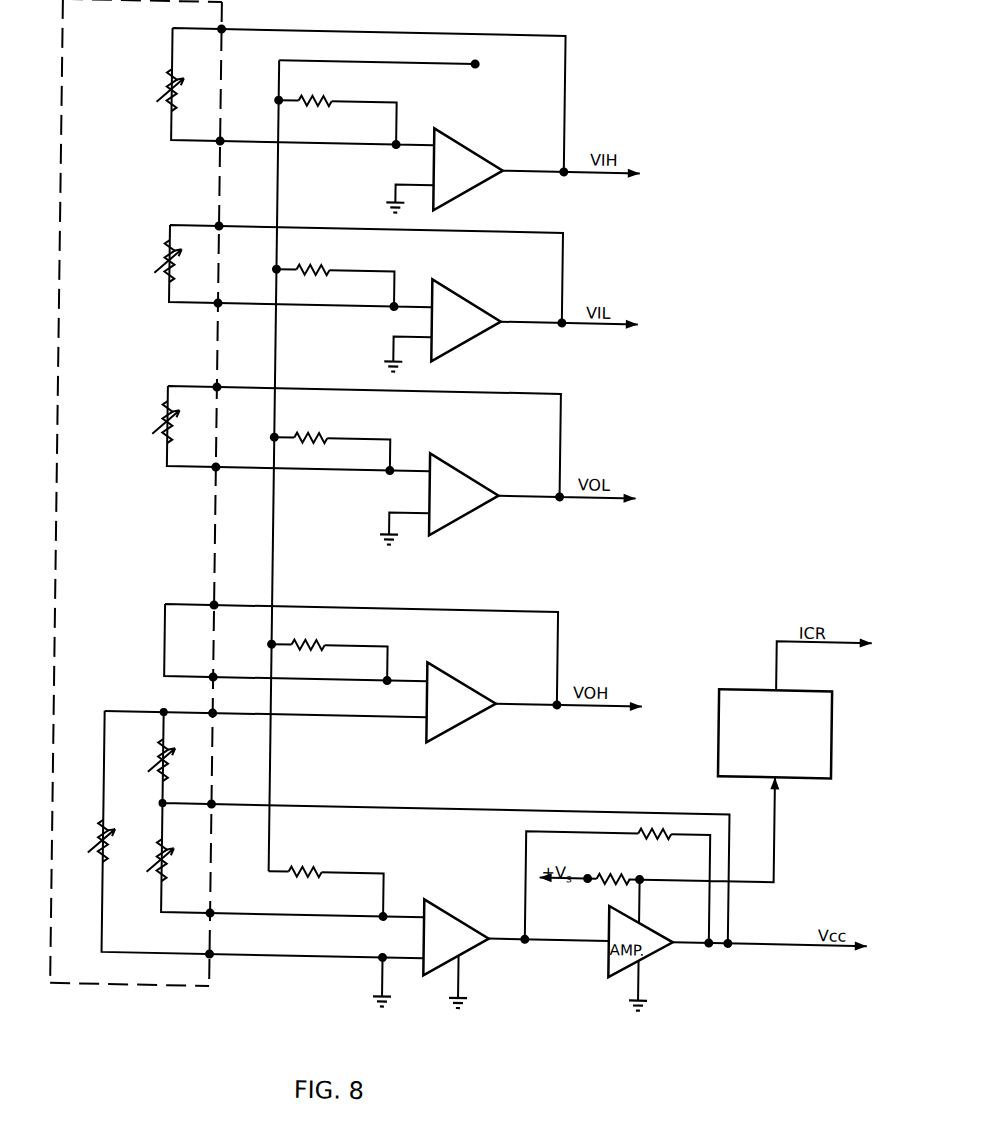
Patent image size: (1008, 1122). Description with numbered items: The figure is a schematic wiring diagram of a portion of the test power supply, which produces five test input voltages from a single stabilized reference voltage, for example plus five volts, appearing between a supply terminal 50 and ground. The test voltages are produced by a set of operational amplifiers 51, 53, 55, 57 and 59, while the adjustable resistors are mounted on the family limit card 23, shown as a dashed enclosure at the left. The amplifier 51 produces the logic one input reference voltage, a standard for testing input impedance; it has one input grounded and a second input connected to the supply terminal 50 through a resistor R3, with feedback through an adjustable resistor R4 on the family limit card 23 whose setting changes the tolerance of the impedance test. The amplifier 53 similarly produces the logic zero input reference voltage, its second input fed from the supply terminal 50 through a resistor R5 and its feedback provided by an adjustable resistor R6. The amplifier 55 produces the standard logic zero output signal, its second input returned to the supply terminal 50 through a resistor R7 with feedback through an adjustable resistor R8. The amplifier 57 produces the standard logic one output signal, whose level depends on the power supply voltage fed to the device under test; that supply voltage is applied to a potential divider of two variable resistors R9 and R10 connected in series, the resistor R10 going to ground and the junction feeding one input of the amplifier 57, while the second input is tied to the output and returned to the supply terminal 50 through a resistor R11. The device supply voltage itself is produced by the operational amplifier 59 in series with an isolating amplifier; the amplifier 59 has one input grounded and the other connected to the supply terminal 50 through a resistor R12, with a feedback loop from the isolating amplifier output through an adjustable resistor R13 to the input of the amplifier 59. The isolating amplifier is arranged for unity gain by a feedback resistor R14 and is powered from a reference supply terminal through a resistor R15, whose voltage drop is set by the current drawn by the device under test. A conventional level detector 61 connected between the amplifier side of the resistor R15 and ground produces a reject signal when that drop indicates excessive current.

The family limit card 23 is at (134, 586).
The supply terminal 50 is at (471, 58).
The operational amplifier 51 is at (468, 146).
The operational amplifier 53 is at (462, 298).
The operational amplifier 55 is at (463, 475).
The operational amplifier 57 is at (466, 677).
The operational amplifier 59 is at (457, 916).
The level detector 61 is at (724, 748).
The resistor R3 is at (314, 114).
The adjustable resistor R4 is at (158, 89).
The resistor R5 is at (312, 282).
The adjustable resistor R6 is at (157, 260).
The resistor R7 is at (310, 449).
The adjustable resistor R8 is at (156, 421).
The variable resistor R9 is at (151, 758).
The variable resistor R10 is at (87, 840).
The resistor R11 is at (308, 657).
The resistor R12 is at (305, 884).
The adjustable resistor R13 is at (147, 863).
The feedback resistor R14 is at (657, 849).
The resistor R15 is at (613, 872).